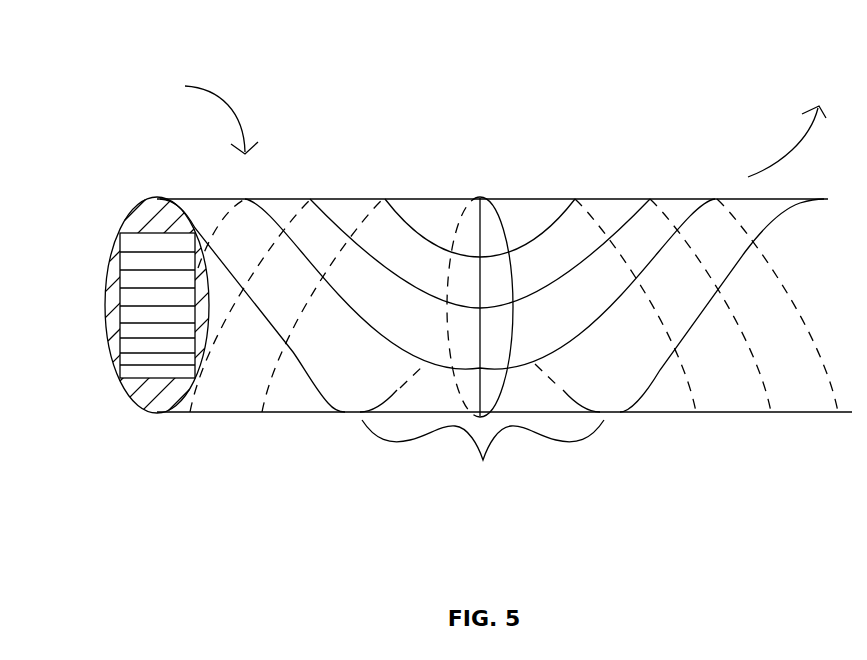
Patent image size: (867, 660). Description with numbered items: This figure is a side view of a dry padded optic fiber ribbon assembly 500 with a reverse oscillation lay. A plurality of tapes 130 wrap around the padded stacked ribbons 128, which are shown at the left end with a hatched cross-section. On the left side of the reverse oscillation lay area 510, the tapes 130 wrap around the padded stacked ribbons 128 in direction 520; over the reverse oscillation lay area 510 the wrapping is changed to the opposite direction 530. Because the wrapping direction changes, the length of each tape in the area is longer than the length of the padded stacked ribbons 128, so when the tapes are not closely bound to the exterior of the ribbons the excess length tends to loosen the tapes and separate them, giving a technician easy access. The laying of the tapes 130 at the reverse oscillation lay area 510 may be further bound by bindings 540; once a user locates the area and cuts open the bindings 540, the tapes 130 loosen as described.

The braided tubular structure 500 is at (48, 34).
The padded stacked ribbon 128 is at (95, 297).
The tapes 130 is at (310, 200).
The bindings 540 is at (480, 200).
The direction 520 is at (221, 115).
The opposite direction 530 is at (786, 141).
The reverse oscillation lay area 510 is at (483, 453).